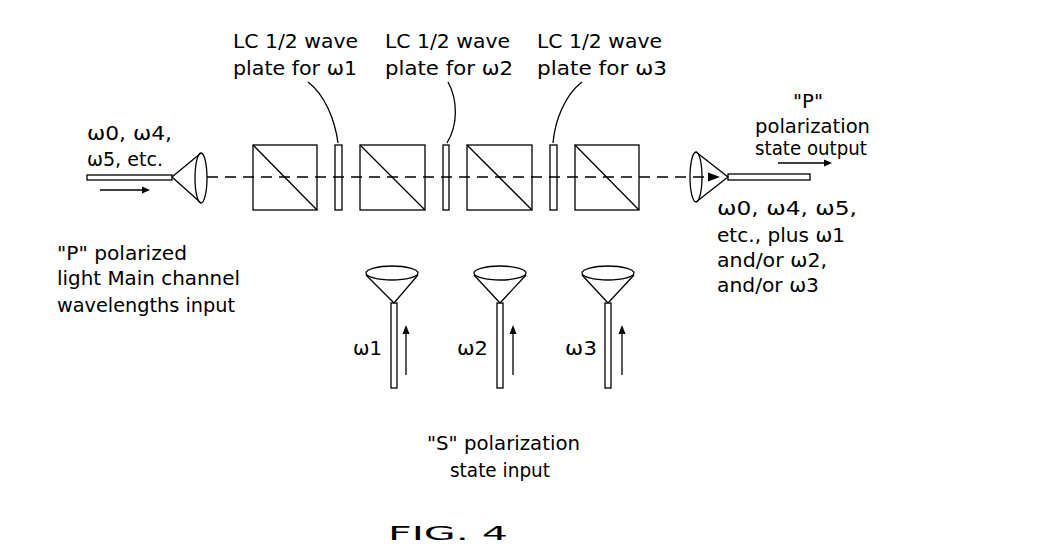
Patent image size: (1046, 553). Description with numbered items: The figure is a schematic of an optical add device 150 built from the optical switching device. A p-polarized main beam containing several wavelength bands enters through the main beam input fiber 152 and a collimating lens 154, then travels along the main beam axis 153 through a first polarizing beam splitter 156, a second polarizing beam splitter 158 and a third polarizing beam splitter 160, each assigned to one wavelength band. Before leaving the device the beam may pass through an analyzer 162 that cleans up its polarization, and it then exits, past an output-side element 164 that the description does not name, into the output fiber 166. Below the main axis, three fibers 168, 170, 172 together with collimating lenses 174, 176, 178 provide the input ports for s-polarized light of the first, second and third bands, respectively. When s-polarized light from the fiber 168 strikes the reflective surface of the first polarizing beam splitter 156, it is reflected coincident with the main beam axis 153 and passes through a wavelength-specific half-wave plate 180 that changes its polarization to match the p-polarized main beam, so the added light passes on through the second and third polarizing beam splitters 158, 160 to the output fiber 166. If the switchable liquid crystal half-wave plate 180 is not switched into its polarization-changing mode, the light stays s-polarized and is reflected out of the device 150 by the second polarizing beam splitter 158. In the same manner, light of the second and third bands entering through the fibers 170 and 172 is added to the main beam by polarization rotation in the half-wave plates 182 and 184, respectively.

The optical add device 150 is at (738, 398).
The main beam input fiber 152 is at (158, 183).
The main beam axis 153 is at (664, 181).
The collimating lens 154 is at (206, 163).
The ω1 polarizing beam splitter 156 is at (261, 146).
The ω2 polarizing beam splitter 158 is at (368, 146).
The ω3 polarizing beam splitter 160 is at (475, 146).
The analyzer 162 is at (583, 146).
The output focusing lens 164 is at (690, 163).
The output fiber 166 is at (734, 173).
The fiber 168 is at (397, 380).
The fiber 170 is at (503, 380).
The fiber 172 is at (611, 380).
The collimating lens 174 is at (370, 270).
The collimating lens 176 is at (477, 270).
The collimating lens 178 is at (585, 270).
The ω1 half-wave plate 180 is at (338, 212).
The ω2 half-wave plate 182 is at (446, 212).
The ω3 half-wave plate 184 is at (553, 212).